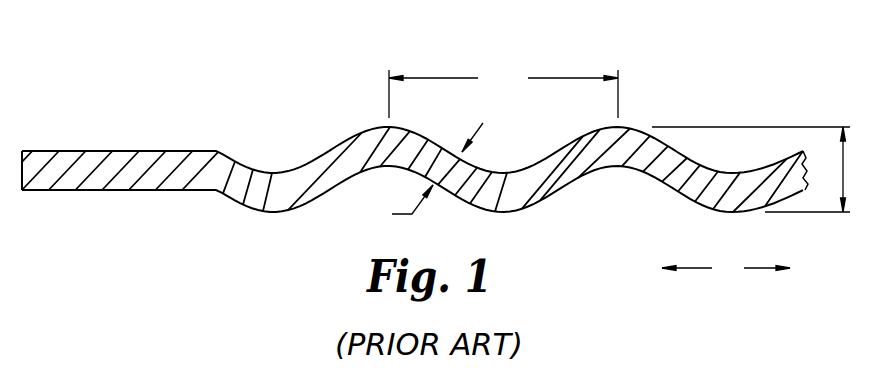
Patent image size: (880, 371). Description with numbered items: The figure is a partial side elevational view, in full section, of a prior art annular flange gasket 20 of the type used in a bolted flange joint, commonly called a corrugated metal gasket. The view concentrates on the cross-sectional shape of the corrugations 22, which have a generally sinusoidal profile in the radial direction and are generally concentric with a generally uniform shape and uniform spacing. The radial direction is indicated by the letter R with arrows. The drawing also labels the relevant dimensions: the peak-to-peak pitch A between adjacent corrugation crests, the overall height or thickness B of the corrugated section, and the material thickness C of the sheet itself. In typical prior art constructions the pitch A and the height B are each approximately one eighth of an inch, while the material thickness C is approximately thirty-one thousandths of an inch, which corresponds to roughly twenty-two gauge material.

The annular flange gasket 20 is at (645, 104).
The corrugations 22 is at (617, 146).
The peak-to-peak pitch A is at (503, 90).
The overall height or thickness B is at (761, 169).
The material thickness C is at (427, 177).
The radial direction R is at (726, 271).